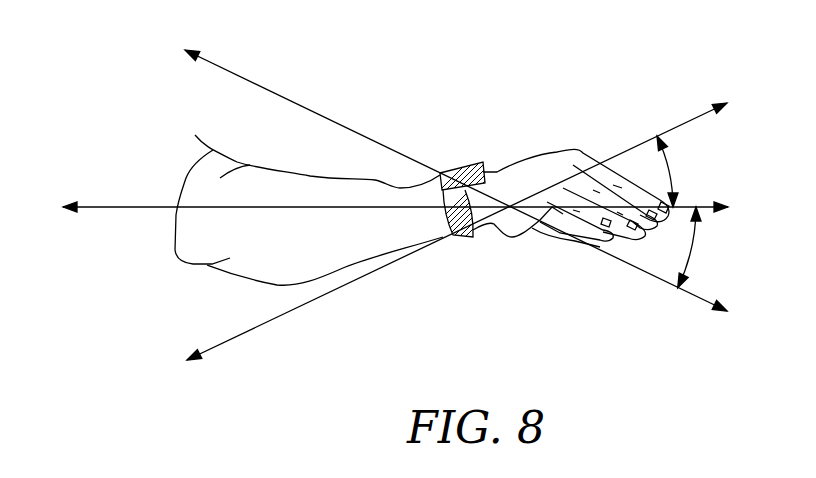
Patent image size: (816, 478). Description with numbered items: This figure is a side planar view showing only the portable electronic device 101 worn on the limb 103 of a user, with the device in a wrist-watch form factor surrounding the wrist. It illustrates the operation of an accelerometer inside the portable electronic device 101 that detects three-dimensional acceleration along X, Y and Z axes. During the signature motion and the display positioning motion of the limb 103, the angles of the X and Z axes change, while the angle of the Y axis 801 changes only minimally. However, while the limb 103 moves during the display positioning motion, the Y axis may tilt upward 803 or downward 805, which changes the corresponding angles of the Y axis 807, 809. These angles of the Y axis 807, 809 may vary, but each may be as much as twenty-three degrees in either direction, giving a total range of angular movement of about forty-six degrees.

The portable electronic device 101 is at (468, 238).
The limb 103 is at (238, 277).
The Y axis 801 is at (251, 208).
The Y axis tilt upward 803 is at (232, 340).
The Y axis tilt downward 805 is at (280, 96).
The angle of the Y axis 807 is at (679, 180).
The angle of the Y axis 809 is at (700, 244).